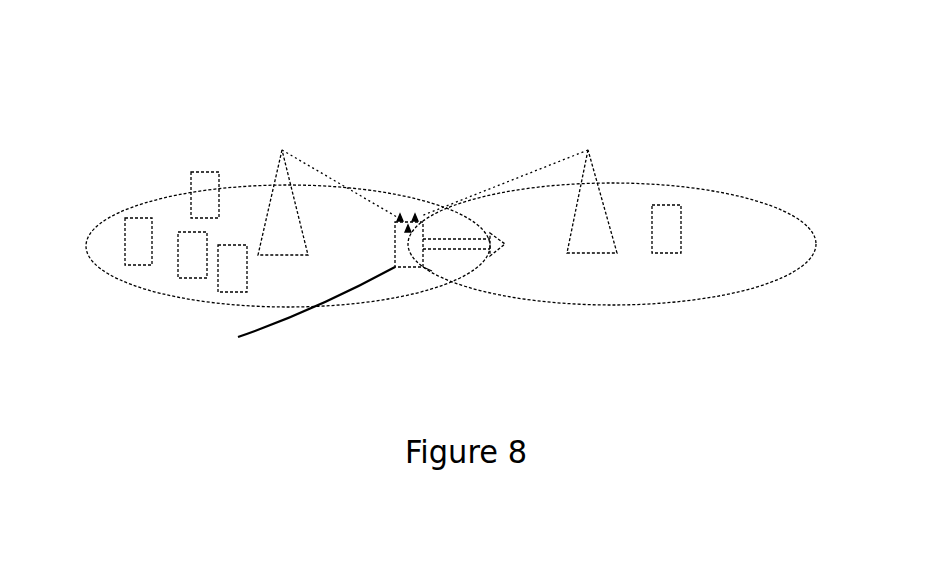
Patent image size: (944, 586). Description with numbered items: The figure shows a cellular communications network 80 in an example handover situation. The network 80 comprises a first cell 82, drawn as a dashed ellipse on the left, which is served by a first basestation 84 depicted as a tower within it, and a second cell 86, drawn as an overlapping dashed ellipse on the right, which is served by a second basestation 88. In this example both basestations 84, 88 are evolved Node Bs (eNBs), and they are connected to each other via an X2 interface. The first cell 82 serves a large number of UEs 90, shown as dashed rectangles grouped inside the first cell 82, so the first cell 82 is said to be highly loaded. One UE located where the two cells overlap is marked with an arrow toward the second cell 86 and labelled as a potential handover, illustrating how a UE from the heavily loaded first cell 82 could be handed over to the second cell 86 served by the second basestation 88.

The cellular communications network 80 is at (518, 62).
The first cell 82 is at (122, 212).
The first basestation 84 is at (282, 150).
The second cell 86 is at (730, 192).
The second basestation 88 is at (588, 150).
The UEs 90 is at (191, 218).